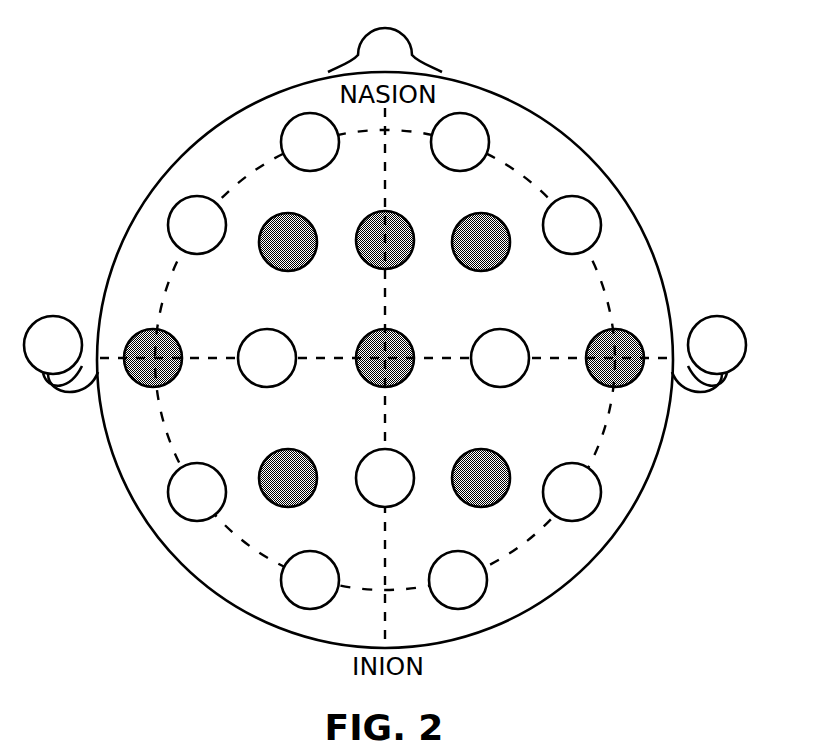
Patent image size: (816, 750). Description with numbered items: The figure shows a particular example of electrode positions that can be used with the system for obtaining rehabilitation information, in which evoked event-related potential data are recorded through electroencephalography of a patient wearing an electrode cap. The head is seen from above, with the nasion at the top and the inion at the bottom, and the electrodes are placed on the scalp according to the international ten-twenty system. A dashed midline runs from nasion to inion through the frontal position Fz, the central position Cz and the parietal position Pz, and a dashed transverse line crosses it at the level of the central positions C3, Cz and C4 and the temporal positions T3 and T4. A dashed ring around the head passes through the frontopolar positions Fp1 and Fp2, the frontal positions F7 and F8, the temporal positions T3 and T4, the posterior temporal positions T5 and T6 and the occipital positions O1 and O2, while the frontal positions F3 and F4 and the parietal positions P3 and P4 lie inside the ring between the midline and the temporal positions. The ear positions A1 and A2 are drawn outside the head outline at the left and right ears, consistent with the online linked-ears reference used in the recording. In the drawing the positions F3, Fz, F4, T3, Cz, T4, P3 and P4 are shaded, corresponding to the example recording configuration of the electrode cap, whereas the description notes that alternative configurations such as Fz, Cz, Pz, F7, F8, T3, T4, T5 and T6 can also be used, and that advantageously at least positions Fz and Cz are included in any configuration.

The left ear reference electrode A1 is at (53, 345).
The right ear reference electrode A2 is at (717, 345).
The left frontopolar electrode Fp1 is at (310, 142).
The right frontopolar electrode Fp2 is at (460, 142).
The F7 electrode position F7 is at (197, 225).
The F3 electrode position F3 is at (288, 242).
The Fz electrode position Fz is at (385, 240).
The F4 electrode position F4 is at (481, 242).
The F8 electrode position F8 is at (572, 225).
The T3 electrode position T3 is at (153, 358).
The left central electrode C3 is at (267, 358).
The Cz electrode position Cz is at (385, 358).
The right central electrode C4 is at (500, 358).
The T4 electrode position T4 is at (615, 358).
The T5 electrode position T5 is at (197, 492).
The P3 electrode position P3 is at (288, 478).
The Pz electrode position Pz is at (385, 478).
The P4 electrode position P4 is at (481, 478).
The T6 electrode position T6 is at (572, 492).
The left occipital electrode O1 is at (310, 580).
The right occipital electrode O2 is at (458, 580).